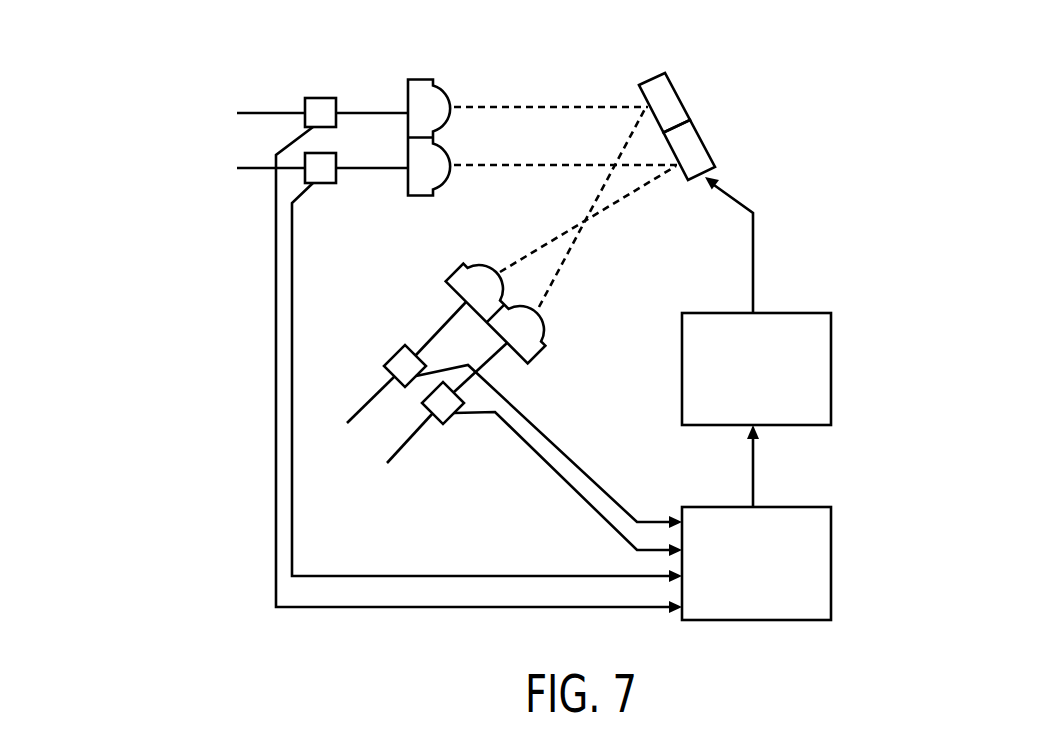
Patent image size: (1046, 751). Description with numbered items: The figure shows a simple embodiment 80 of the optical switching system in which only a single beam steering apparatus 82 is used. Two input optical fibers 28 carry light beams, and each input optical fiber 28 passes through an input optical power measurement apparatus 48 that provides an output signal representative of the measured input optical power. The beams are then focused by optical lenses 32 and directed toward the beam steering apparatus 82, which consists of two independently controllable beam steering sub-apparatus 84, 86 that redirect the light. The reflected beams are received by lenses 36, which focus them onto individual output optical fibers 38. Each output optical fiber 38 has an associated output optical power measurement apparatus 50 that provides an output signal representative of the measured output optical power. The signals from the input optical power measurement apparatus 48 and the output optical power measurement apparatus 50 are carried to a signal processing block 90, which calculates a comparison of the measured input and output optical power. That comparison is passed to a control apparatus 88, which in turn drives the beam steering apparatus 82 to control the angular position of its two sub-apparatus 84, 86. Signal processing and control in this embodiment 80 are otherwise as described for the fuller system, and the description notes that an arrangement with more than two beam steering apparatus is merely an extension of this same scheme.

The input optical fibers 28 is at (253, 110).
The optical lenses 32 is at (417, 79).
The lenses 36 is at (537, 354).
The output optical fibers 38 is at (552, 473).
The input optical power measurement apparatus 48 is at (317, 97).
The output optical power measurement apparatus 50 is at (447, 422).
The embodiment 80 is at (866, 170).
The beam steering apparatus 82 is at (728, 47).
The beam steering sub-apparatus 84 is at (673, 85).
The beam steering sub-apparatus 86 is at (705, 138).
The control apparatus 88 is at (833, 330).
The signal processing unit 90 is at (833, 520).